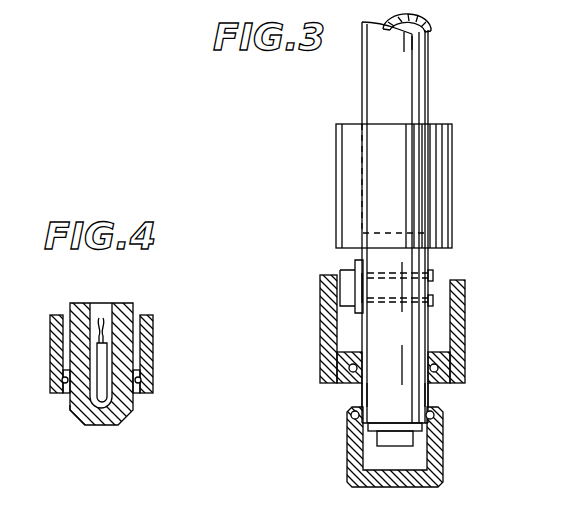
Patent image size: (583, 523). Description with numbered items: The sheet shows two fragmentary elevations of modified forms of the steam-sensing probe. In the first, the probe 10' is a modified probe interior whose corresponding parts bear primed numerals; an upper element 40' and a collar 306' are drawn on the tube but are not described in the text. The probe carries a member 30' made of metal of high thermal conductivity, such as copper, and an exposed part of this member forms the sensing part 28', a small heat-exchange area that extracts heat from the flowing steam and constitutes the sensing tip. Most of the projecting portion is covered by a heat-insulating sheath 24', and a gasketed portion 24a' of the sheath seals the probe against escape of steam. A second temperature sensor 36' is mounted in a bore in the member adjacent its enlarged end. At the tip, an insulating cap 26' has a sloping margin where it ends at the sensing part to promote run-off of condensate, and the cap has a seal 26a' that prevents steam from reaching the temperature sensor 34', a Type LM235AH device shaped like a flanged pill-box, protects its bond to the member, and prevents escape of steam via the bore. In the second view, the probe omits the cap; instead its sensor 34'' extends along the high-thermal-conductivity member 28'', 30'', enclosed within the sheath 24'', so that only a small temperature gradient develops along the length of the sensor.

In FIG. 3, the probe 10' is at (375, 222).
In FIG. 3, the cap 40' is at (430, 48).
In FIG. 3, the collar 306' is at (425, 186).
In FIG. 3, the second temperature sensor 36' is at (323, 278).
In FIG. 3, the member 30' is at (424, 284).
In FIG. 3, the sheath 24' is at (413, 329).
In FIG. 3, the gasketed portion 24a' is at (347, 373).
In FIG. 3, the sensing part 28' is at (424, 401).
In FIG. 3, the insulating cap 26' is at (416, 447).
In FIG. 3, the seal 26a' is at (349, 425).
In FIG. 3, the temperature sensor 34' is at (427, 437).
In FIG. 4, the member 30'' is at (88, 345).
In FIG. 4, the sensor 34'' is at (149, 364).
In FIG. 4, the sheath 24'' is at (79, 354).
In FIG. 4, the sensing part 28'' is at (68, 434).